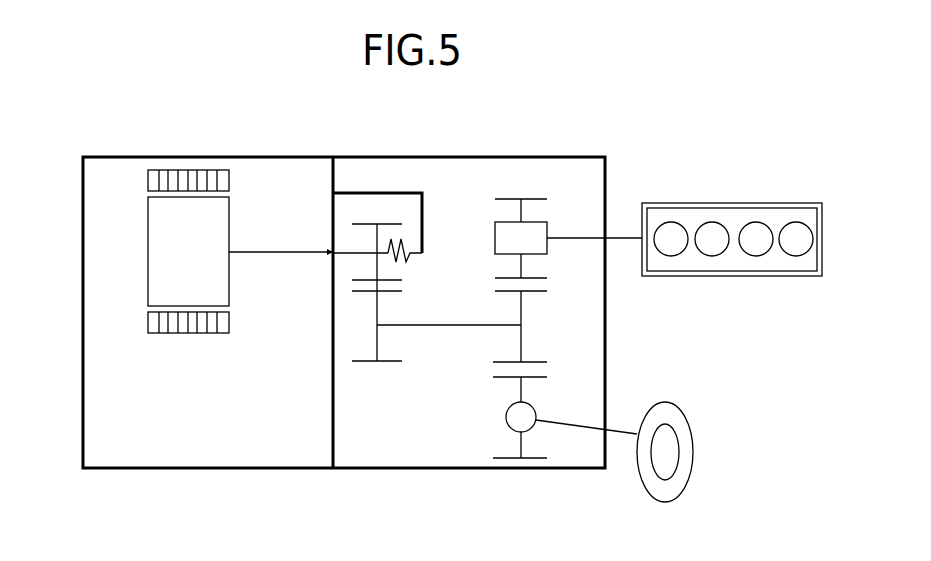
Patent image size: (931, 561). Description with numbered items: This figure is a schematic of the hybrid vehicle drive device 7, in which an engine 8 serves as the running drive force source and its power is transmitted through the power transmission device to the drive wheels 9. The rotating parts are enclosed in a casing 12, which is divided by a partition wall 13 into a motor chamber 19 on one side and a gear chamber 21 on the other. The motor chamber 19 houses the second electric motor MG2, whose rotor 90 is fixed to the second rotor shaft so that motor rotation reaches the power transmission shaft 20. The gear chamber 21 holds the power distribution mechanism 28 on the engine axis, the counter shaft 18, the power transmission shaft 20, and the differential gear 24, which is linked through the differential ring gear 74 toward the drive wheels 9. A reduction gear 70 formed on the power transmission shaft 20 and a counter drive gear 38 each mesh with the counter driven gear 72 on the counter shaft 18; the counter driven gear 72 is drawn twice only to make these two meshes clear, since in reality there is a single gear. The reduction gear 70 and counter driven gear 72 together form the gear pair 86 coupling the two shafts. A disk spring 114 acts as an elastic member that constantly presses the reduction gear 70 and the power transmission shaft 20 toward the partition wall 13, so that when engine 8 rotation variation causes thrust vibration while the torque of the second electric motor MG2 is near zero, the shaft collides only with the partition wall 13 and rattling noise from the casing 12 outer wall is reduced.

The hybrid vehicle drive device 7 is at (720, 126).
The engine 8 is at (738, 222).
The drive wheels 9 is at (663, 418).
The casing 12 is at (398, 157).
The partition wall 13 is at (330, 183).
The counter shaft 18 is at (438, 330).
The motor chamber 19 is at (178, 443).
The power transmission shaft 20 is at (352, 250).
The gear chamber 21 is at (409, 418).
The differential gear 24 is at (550, 408).
The power distribution mechanism 28 is at (556, 228).
The counter drive gear 38 is at (497, 199).
The reduction gear 70 is at (362, 224).
The counter driven gear 72 is at (364, 364).
The differential ring gear 74 is at (500, 460).
The gear pair 86 is at (343, 300).
The rotor 90 is at (185, 212).
The disk spring 114 is at (400, 260).
The second electric motor MG2 is at (128, 193).